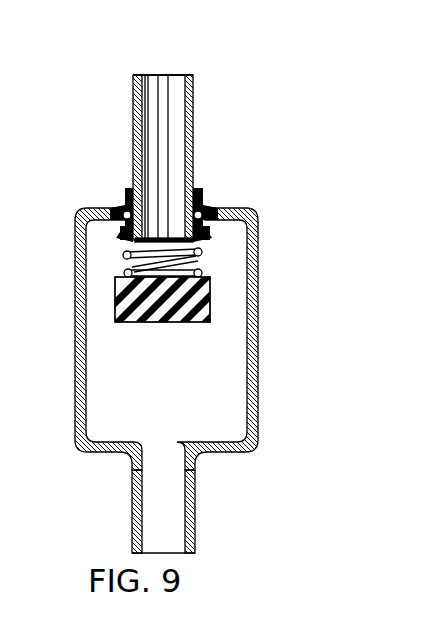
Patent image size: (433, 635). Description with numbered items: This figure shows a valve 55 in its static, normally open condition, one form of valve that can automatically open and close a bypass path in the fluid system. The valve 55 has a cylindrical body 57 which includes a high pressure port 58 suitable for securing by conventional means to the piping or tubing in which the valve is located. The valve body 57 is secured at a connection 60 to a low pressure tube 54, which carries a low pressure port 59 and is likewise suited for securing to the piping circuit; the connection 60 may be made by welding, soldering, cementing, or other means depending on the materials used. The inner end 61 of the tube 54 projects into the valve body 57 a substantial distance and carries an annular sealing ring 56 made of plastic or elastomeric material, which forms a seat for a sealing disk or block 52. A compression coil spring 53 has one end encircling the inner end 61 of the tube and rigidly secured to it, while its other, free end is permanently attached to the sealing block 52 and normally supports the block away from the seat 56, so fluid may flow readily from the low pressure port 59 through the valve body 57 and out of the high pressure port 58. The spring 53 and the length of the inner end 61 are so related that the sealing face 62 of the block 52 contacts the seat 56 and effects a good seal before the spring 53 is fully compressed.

The sealing disk or block 52 is at (215, 298).
The compression coil spring 53 is at (96, 275).
The tube 54 is at (137, 125).
The valve 55 is at (58, 338).
The annular sealing ring 56 is at (213, 232).
The cylindrical body 57 is at (257, 408).
The high pressure port 58 is at (168, 503).
The low pressure port 59 is at (173, 87).
The connection 60 is at (200, 193).
The inner end 61 is at (131, 233).
The sealing face 62 is at (213, 270).